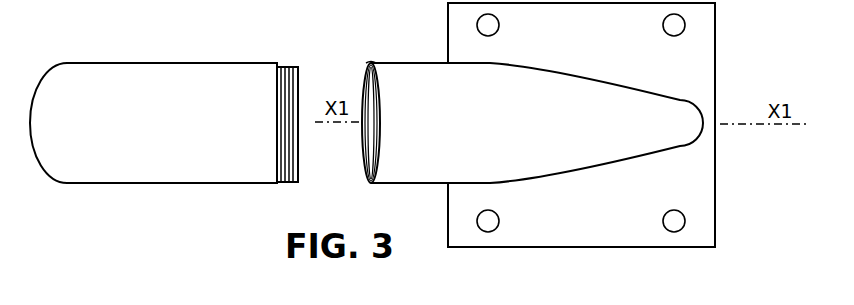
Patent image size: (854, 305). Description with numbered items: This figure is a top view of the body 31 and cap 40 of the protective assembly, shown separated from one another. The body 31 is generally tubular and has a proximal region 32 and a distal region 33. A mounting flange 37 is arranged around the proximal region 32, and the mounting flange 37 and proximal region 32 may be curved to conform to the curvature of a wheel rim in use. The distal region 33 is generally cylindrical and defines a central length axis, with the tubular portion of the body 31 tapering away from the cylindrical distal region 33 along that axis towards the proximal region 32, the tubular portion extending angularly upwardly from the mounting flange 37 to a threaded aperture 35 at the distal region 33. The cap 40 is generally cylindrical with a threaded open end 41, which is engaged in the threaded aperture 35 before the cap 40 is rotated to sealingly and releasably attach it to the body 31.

The body 31 is at (427, 172).
The proximal region 32 is at (723, 152).
The distal region 33 is at (365, 62).
The threaded aperture 35 is at (364, 176).
The mounting flange 37 is at (638, 237).
The cap 40 is at (153, 173).
The threaded open end 41 is at (293, 66).